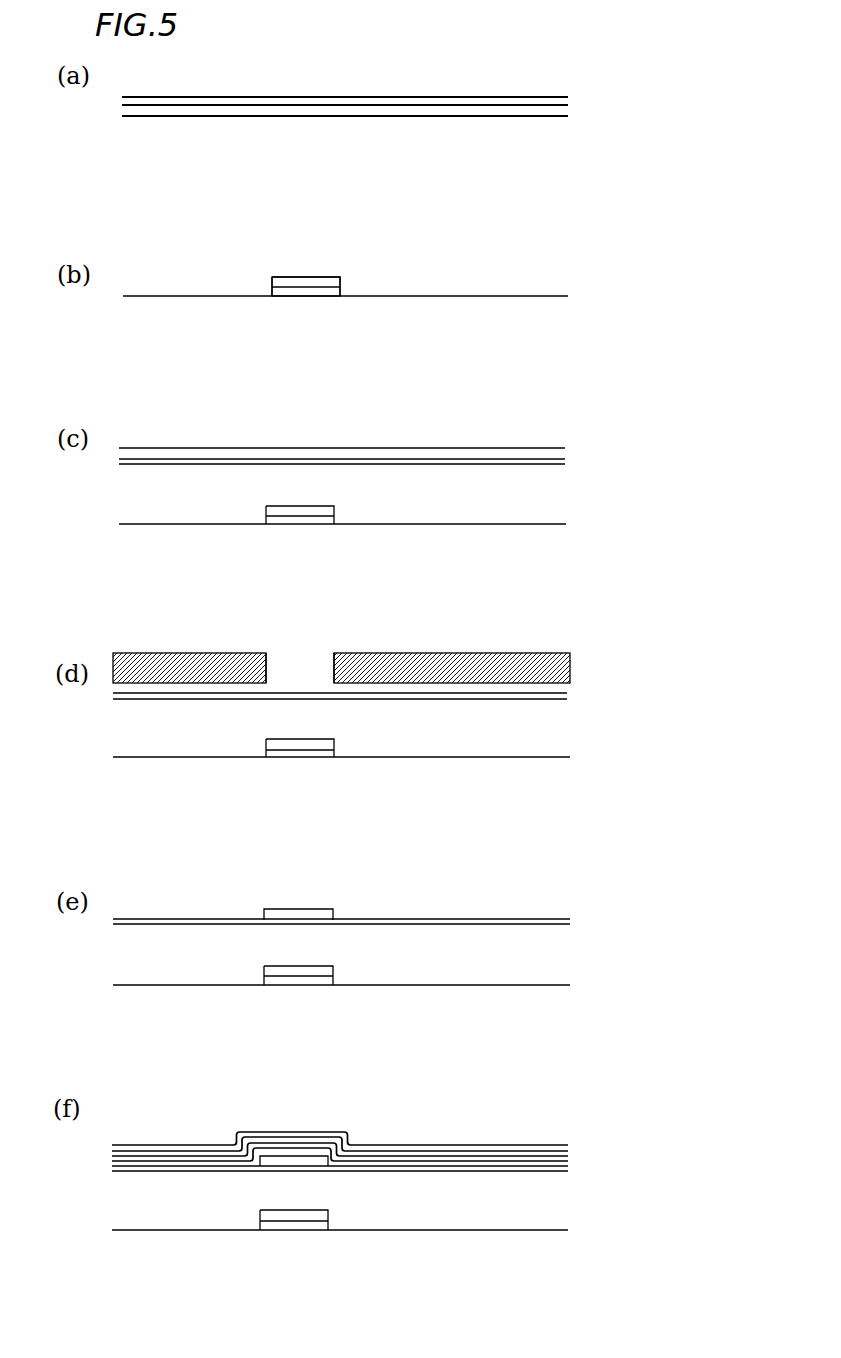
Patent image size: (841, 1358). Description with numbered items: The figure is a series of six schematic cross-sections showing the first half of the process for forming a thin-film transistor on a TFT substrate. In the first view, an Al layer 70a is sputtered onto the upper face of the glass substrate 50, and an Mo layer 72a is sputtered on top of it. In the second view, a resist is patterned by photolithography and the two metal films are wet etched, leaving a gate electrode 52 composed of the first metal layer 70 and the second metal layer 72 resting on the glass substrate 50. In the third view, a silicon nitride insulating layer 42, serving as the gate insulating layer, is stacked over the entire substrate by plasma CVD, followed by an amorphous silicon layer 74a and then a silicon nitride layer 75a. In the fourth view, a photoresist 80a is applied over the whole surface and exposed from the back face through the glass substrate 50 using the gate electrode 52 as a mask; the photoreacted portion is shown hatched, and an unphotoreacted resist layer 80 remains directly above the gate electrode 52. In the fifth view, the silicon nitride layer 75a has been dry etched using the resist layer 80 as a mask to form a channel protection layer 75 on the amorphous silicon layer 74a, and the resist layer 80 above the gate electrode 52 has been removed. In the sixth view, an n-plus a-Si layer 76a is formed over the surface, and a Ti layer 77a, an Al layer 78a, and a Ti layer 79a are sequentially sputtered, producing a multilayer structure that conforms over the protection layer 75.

The Mo layer 72a is at (568, 101).
The Al layer 70a is at (568, 112).
The glass substrate 50 is at (555, 167).
The second metal layer 72 is at (340, 280).
The first metal layer 70 is at (340, 292).
The gate electrode 52 is at (447, 237).
The silicon nitride layer 75a is at (565, 452).
The amorphous silicon layer 74a is at (565, 462).
The gate insulating layer 42 is at (565, 506).
The photoresist 80a is at (570, 658).
The resist layer 80 is at (310, 662).
The protection layer 75 is at (310, 913).
The n+ a-Si layer 76a is at (565, 1164).
The Ti layer 77a is at (420, 1160).
The Al layer 78a is at (352, 1142).
The Ti layer 79a is at (343, 1134).